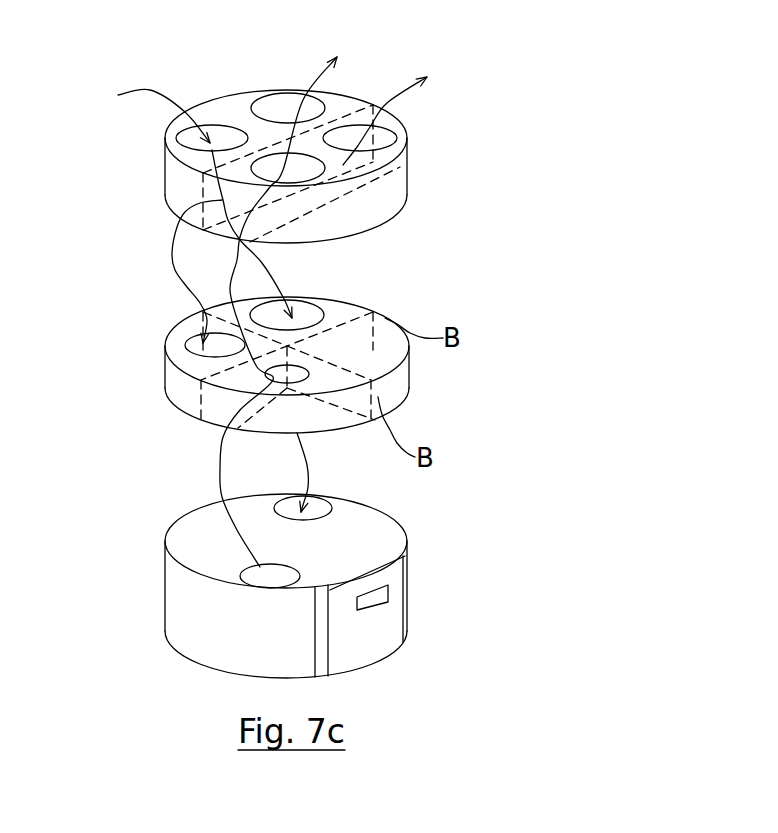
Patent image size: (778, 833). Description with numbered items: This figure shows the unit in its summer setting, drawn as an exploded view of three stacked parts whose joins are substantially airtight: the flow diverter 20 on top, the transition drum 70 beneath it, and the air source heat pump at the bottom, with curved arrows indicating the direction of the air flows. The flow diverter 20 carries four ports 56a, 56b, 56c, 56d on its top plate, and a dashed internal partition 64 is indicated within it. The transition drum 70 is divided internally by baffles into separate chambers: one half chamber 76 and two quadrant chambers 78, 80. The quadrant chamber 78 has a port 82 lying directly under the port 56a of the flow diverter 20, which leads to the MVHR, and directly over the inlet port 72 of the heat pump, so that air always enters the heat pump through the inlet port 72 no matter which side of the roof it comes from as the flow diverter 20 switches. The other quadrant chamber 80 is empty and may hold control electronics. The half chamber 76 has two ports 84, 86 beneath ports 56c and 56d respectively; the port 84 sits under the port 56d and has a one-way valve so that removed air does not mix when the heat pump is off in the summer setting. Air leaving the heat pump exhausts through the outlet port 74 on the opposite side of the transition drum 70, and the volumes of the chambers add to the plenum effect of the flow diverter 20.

The flow diverter 20 is at (410, 168).
The port 56a is at (177, 138).
The port 56b is at (257, 90).
The port 56c is at (398, 137).
The port 56d is at (297, 170).
The partition 64 is at (223, 199).
The transition drum 70 is at (410, 370).
The inlet port 72 is at (322, 505).
The outlet port 74 is at (240, 570).
The half chamber 76 is at (180, 381).
The quadrant chamber 78 is at (327, 316).
The quadrant chamber 80 is at (387, 382).
The port 82 is at (183, 287).
The port 84 is at (270, 385).
The port 86 is at (185, 346).